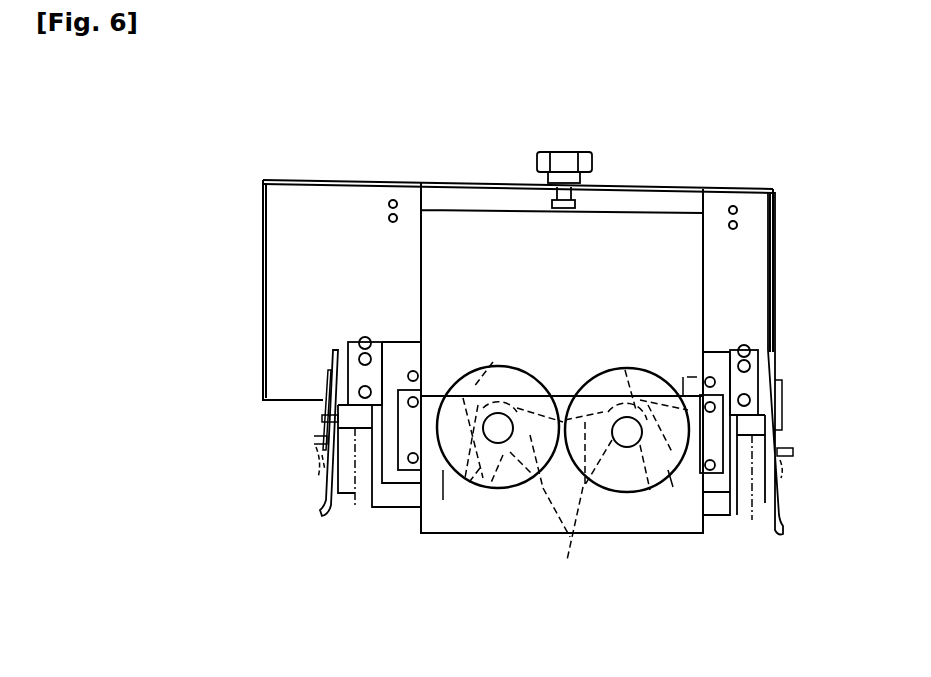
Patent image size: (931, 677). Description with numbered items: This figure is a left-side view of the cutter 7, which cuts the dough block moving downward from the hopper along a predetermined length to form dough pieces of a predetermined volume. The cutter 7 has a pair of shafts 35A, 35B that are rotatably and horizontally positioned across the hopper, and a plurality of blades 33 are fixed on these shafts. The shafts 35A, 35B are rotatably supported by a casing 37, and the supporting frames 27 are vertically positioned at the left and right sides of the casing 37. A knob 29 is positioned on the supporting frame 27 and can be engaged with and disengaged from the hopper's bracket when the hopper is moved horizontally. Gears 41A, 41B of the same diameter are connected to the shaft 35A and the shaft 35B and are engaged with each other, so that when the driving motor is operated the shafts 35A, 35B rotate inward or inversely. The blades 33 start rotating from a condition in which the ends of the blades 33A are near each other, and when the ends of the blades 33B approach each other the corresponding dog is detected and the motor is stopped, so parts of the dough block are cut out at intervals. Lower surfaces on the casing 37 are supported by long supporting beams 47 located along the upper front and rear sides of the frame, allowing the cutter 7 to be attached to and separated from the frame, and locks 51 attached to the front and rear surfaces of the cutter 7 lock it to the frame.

The cutter 7 is at (762, 174).
The supporting frame 27 is at (652, 216).
The knob 29 is at (563, 161).
The blade 33 is at (600, 392).
The blade 33A is at (568, 542).
The blade 33B is at (491, 372).
The shaft 35A is at (628, 447).
The shaft 35B is at (498, 432).
The casing 37 is at (397, 518).
The gear 41A is at (673, 487).
The gear 41B is at (443, 500).
The supporting beam 47 is at (343, 503).
The lock 51 is at (299, 449).